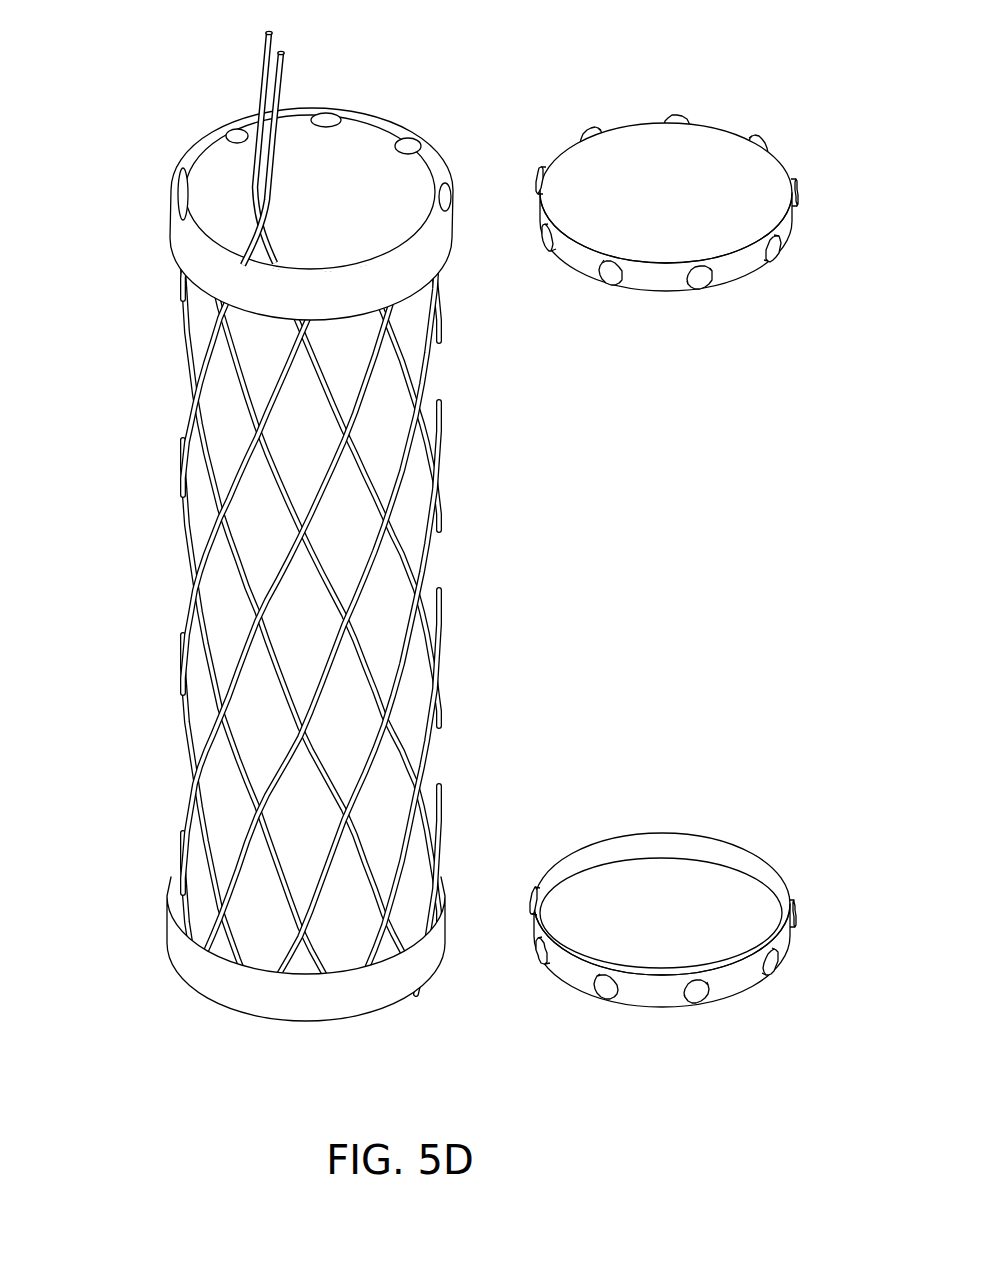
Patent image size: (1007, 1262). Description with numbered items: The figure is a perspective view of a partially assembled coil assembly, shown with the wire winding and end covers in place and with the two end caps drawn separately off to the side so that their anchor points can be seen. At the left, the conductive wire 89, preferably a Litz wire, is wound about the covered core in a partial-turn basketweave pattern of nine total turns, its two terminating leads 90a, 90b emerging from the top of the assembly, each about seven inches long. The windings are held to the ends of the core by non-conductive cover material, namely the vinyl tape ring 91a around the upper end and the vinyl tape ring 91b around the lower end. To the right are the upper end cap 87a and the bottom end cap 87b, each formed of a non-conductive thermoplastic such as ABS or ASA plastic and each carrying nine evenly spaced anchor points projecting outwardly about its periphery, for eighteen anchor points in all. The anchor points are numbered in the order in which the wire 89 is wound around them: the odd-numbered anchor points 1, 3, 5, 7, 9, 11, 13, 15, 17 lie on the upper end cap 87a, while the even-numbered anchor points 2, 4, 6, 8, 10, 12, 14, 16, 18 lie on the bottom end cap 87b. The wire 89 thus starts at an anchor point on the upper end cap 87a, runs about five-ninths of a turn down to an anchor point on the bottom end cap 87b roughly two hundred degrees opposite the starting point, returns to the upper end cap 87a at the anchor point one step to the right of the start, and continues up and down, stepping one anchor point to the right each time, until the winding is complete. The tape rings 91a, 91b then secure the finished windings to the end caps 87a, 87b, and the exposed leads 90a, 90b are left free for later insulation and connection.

The conductive wire 89 is at (183, 452).
The vinyl tape ring 91a is at (193, 250).
The vinyl tape ring 91b is at (175, 938).
The terminating lead 90a is at (263, 60).
The terminating lead 90b is at (283, 70).
The upper end cap 87a is at (753, 273).
The bottom end cap 87b is at (722, 838).
The anchor point 1 is at (608, 290).
The anchor point 3 is at (700, 295).
The anchor point 5 is at (787, 260).
The anchor point 7 is at (812, 195).
The anchor point 9 is at (767, 134).
The anchor point 11 is at (675, 108).
The anchor point 13 is at (581, 124).
The anchor point 15 is at (520, 177).
The anchor point 17 is at (525, 240).
The anchor point 2 is at (668, 827).
The anchor point 4 is at (576, 843).
The anchor point 6 is at (516, 900).
The anchor point 8 is at (525, 958).
The anchor point 10 is at (598, 1006).
The anchor point 12 is at (701, 1013).
The anchor point 14 is at (791, 977).
The anchor point 16 is at (815, 912).
The anchor point 18 is at (764, 851).